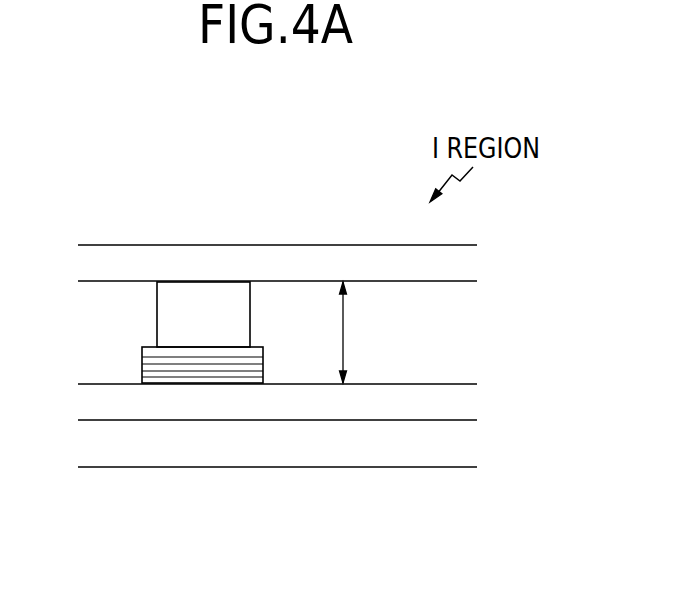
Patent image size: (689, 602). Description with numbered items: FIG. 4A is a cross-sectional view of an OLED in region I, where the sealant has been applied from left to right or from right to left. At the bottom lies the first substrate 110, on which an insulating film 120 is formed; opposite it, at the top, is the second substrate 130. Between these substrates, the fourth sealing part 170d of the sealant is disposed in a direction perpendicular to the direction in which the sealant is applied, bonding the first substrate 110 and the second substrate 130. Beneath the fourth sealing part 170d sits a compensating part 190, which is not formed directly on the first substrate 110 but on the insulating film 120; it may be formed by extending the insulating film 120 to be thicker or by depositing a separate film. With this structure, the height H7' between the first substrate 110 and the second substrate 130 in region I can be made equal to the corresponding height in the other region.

The first substrate 110 is at (385, 447).
The insulating film 120 is at (302, 407).
The second substrate 130 is at (312, 265).
The fourth sealing part 170d is at (198, 303).
The compensating part 190 is at (193, 380).
The height H7' is at (364, 332).